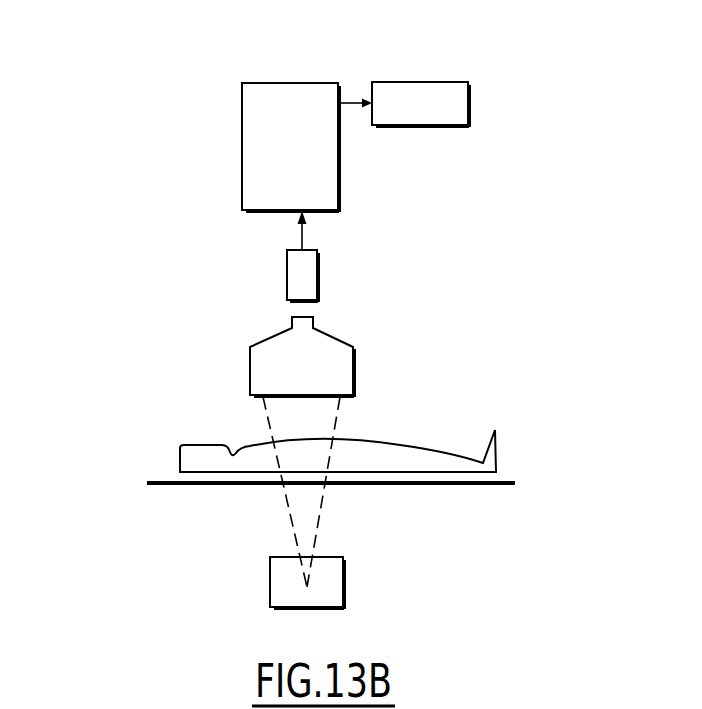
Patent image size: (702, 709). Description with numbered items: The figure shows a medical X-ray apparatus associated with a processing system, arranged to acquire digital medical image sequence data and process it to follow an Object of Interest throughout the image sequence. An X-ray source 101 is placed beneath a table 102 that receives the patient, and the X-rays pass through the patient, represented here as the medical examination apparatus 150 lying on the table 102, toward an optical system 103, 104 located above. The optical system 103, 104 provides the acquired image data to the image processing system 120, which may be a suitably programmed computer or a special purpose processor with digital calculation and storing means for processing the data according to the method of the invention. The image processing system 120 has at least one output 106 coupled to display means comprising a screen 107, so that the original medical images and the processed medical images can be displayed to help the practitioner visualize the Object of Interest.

The X-ray source 101 is at (268, 577).
The table 102 is at (212, 488).
The optical system 103 is at (258, 342).
The optical system 104 is at (286, 275).
The output 106 is at (353, 83).
The screen 107 is at (470, 112).
The image processing system 120 is at (260, 124).
The medical examination apparatus 150 is at (180, 432).